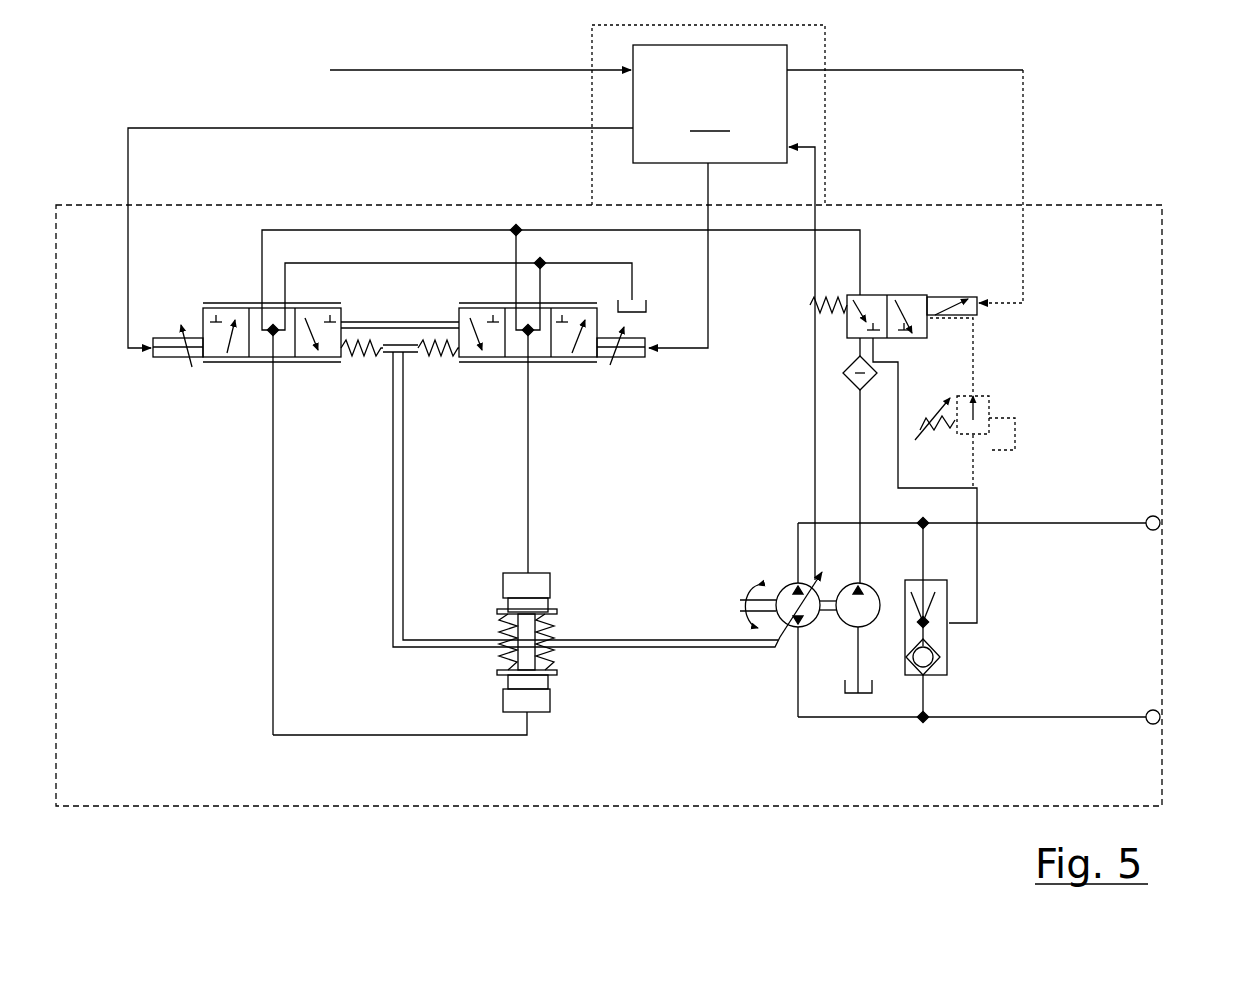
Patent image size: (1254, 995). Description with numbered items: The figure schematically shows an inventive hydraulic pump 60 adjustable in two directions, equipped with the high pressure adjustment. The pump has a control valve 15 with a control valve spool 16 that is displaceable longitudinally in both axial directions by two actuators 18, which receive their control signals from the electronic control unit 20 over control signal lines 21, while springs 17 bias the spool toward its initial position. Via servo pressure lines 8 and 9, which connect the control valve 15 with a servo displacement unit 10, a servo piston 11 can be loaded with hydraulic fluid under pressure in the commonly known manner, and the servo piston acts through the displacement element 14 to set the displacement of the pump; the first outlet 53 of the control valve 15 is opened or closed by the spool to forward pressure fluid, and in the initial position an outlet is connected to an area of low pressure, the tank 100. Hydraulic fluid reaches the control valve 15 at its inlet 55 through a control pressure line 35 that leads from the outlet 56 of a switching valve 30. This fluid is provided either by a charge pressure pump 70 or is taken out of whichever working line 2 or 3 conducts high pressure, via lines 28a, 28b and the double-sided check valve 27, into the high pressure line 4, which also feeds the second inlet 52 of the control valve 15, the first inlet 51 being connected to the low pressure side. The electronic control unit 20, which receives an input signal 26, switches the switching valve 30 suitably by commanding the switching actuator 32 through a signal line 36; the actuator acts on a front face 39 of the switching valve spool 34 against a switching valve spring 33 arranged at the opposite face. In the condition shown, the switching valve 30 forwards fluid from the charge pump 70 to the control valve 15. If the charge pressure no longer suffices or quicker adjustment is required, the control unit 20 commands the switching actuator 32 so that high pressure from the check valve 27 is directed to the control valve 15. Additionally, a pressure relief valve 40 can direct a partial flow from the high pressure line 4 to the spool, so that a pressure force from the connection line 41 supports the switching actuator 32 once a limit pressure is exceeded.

The working line 2 is at (1100, 525).
The working line 3 is at (1123, 717).
The high pressure line 4 is at (977, 507).
The servo pressure line 8 is at (275, 620).
The servo pressure line 9 is at (528, 530).
The servo displacement unit 10 is at (465, 697).
The servo piston 11 is at (530, 610).
The displacement element 14 is at (660, 645).
The control valve 15 is at (303, 478).
The control valve spool 16 is at (398, 320).
The spring 17 is at (365, 367).
The actuator 18 is at (175, 345).
The electronic control unit 20 is at (710, 104).
The control signal line 21 is at (130, 357).
The input signal 26 is at (457, 70).
The check valve 27 is at (948, 635).
The line 28a is at (920, 553).
The line 28b is at (925, 680).
The switching valve 30 is at (930, 258).
The switching actuator 32 is at (962, 297).
The switching valve spring 33 is at (815, 300).
The switching valve spool 34 is at (875, 308).
The control pressure line 35 is at (840, 228).
The signal line 36 is at (1023, 160).
The front face 39 is at (927, 330).
The pressure relief valve 40 is at (1045, 430).
The connection line 41 is at (973, 347).
The first inlet 51 is at (857, 340).
The second inlet 52 is at (875, 335).
The first outlet 53 is at (273, 363).
The inlet 55 is at (262, 303).
The outlet 56 is at (873, 295).
The hydraulic pump 60 is at (1165, 215).
The charge pressure pump 70 is at (850, 615).
The tank 100 is at (637, 306).